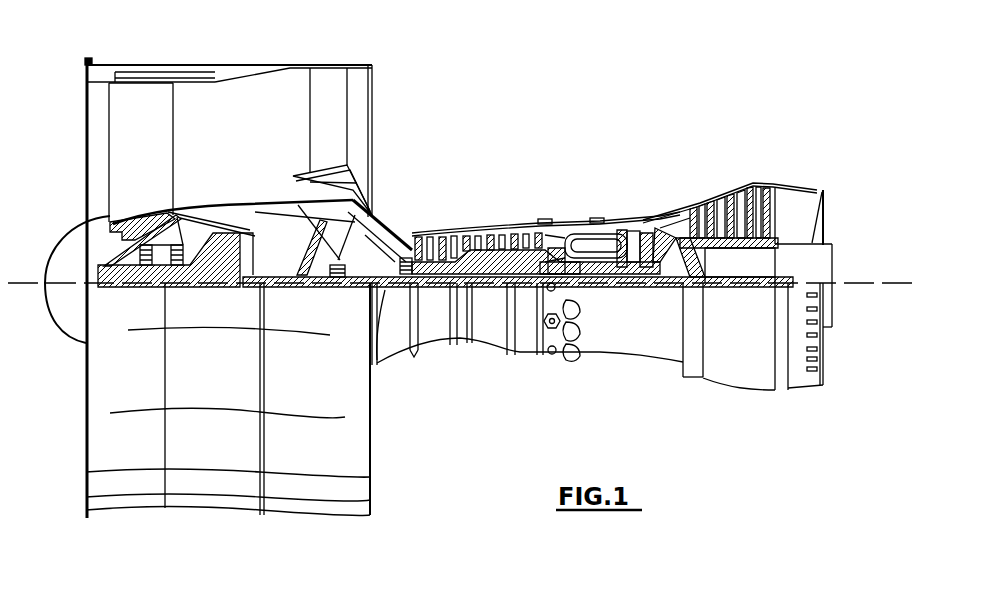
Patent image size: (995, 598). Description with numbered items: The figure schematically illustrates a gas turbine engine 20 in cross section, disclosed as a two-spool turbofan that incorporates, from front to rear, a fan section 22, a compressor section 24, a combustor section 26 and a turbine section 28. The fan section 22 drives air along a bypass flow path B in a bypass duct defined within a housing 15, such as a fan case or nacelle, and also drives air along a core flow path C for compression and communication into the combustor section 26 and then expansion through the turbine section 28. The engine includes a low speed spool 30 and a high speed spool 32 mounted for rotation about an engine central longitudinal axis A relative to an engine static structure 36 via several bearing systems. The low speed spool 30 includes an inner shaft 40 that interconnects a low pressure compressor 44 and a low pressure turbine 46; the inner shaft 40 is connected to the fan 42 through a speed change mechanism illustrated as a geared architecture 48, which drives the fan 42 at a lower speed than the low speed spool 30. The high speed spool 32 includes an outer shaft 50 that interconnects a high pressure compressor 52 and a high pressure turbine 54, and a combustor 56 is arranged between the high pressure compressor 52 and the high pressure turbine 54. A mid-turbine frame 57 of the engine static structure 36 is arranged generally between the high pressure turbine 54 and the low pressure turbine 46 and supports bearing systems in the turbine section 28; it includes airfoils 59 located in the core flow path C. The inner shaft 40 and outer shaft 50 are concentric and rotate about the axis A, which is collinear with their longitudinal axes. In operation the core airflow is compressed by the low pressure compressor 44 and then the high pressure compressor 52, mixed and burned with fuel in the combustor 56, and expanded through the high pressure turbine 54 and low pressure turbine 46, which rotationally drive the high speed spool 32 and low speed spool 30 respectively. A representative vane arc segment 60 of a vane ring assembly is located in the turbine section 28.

The gas turbine engine 20 is at (592, 104).
The fan section 22 is at (173, 60).
The housing 15 is at (228, 67).
The fan 42 is at (157, 164).
The low pressure compressor 44 is at (322, 217).
The compressor section 24 is at (408, 212).
The high pressure compressor 52 is at (470, 235).
The high speed spool 32 is at (522, 233).
The combustor section 26 is at (583, 200).
The combustor 56 is at (582, 240).
The high pressure turbine 54 is at (628, 226).
The mid-turbine frame 57 is at (674, 204).
The vane arc segment 60 is at (660, 222).
The turbine section 28 is at (712, 160).
The low pressure turbine 46 is at (735, 192).
The airfoils 59 is at (690, 255).
The outer shaft 50 is at (585, 288).
The geared architecture 48 is at (228, 270).
The inner shaft 40 is at (385, 290).
The low speed spool 30 is at (493, 296).
The engine static structure 36 is at (526, 360).
The engine central longitudinal axis A is at (895, 283).
The bypass flow path B is at (206, 125).
The core flow path C is at (236, 203).